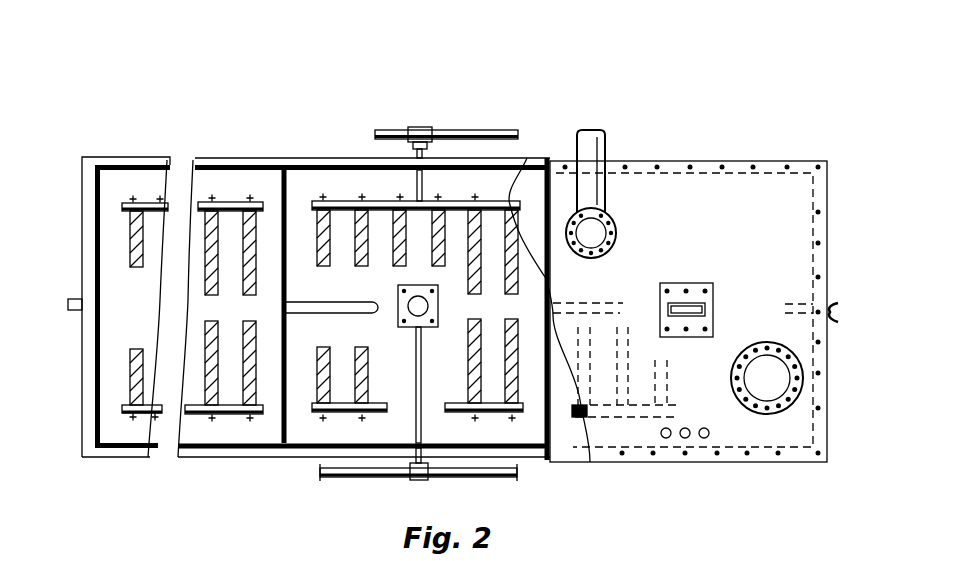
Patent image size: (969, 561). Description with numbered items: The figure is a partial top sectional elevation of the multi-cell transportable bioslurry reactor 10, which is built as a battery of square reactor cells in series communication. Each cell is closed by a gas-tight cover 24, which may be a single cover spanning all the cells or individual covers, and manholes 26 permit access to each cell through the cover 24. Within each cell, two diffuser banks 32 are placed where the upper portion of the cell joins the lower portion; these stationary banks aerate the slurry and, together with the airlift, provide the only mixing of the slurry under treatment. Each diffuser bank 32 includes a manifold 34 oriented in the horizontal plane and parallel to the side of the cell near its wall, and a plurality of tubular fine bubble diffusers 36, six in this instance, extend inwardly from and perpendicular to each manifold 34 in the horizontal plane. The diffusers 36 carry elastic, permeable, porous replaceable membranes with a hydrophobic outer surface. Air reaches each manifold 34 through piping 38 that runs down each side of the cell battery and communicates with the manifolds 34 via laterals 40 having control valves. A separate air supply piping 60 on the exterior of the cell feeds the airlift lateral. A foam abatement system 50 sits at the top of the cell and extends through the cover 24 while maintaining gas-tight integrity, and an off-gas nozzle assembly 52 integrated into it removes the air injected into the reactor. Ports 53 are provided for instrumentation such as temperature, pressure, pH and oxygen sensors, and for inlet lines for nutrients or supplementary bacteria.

The multi-cell transportable bioslurry reactor 10 is at (755, 148).
The gas-tight cover 24 is at (767, 234).
The manhole 26 is at (783, 373).
The diffuser bank 32 is at (232, 194).
The manifold 34 is at (527, 158).
The tubular fine bubble diffuser 36 is at (135, 207).
The piping 38 is at (398, 130).
The lateral 40 is at (424, 188).
The foam abatement system 50 is at (618, 150).
The off-gas nozzle assembly 52 is at (618, 150).
The port 53 is at (666, 438).
The air supply piping 60 is at (482, 480).